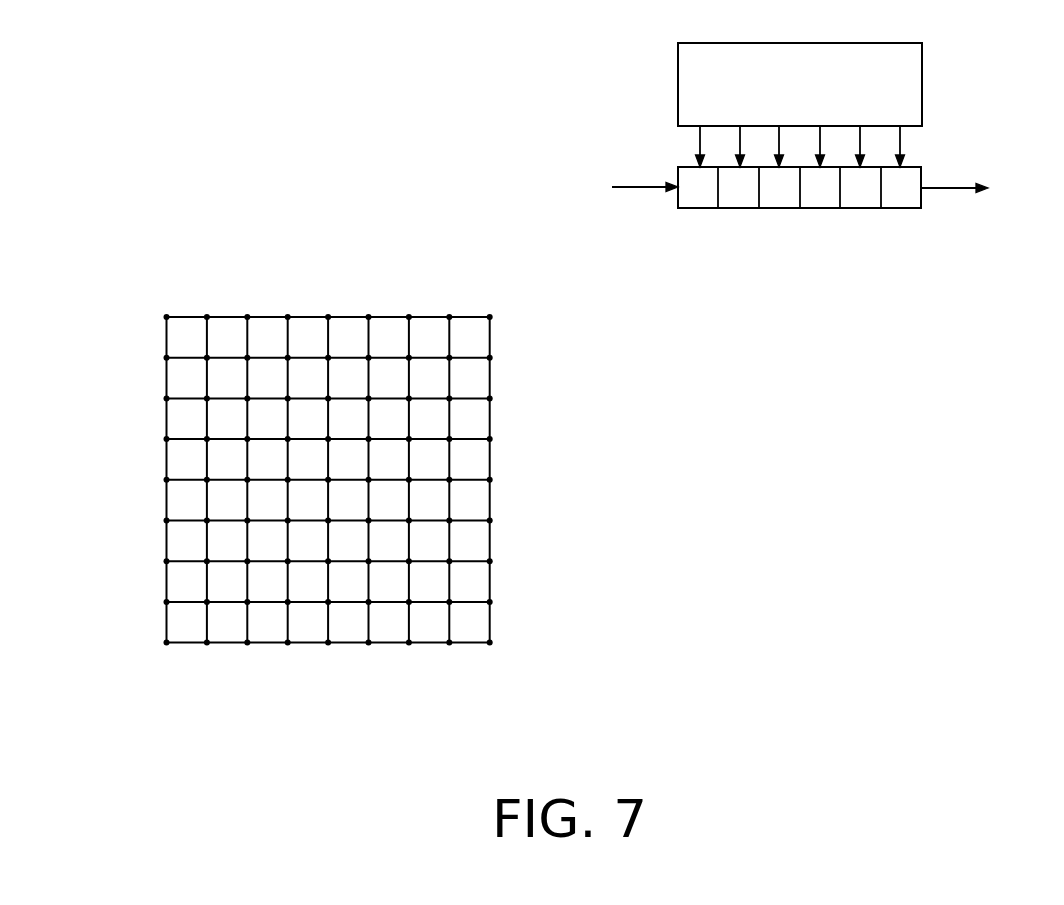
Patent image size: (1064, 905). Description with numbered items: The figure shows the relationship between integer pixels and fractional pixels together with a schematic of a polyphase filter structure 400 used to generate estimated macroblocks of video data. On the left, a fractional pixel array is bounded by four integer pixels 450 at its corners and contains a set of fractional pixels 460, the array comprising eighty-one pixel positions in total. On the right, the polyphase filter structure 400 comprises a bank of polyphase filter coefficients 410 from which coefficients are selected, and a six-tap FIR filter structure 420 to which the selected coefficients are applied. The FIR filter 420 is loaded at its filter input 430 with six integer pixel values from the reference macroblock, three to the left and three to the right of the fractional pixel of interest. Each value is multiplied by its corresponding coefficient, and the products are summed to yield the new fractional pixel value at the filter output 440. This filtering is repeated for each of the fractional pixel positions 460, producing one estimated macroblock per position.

The polyphase filter structure 400 is at (610, 66).
The polyphase filter coefficients 410 is at (800, 43).
The 6-tap FIR filter structure 420 is at (900, 208).
The filter input 430 is at (638, 187).
The filter output 440 is at (945, 188).
The integer pixels 450 is at (496, 310).
The fractional pixels 460 is at (505, 398).